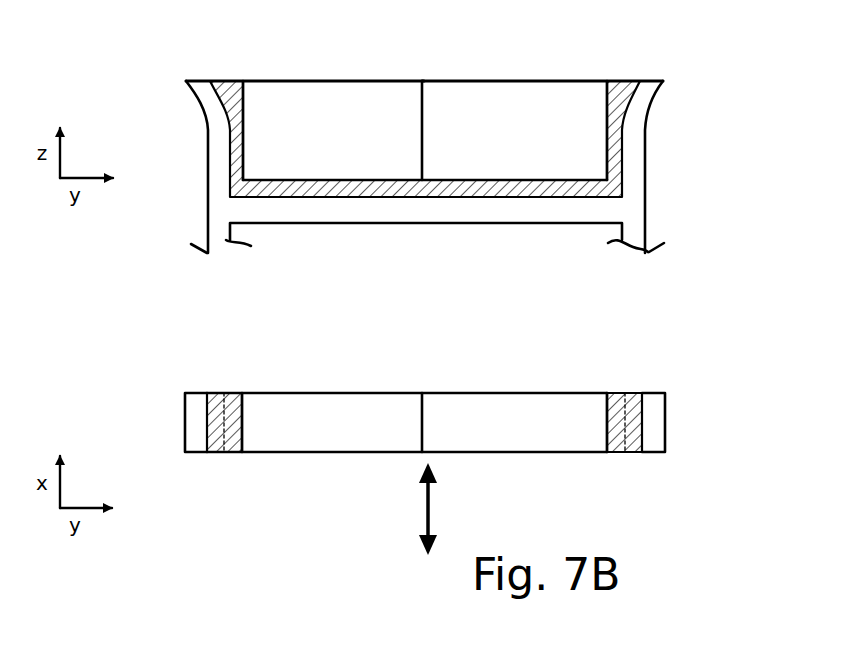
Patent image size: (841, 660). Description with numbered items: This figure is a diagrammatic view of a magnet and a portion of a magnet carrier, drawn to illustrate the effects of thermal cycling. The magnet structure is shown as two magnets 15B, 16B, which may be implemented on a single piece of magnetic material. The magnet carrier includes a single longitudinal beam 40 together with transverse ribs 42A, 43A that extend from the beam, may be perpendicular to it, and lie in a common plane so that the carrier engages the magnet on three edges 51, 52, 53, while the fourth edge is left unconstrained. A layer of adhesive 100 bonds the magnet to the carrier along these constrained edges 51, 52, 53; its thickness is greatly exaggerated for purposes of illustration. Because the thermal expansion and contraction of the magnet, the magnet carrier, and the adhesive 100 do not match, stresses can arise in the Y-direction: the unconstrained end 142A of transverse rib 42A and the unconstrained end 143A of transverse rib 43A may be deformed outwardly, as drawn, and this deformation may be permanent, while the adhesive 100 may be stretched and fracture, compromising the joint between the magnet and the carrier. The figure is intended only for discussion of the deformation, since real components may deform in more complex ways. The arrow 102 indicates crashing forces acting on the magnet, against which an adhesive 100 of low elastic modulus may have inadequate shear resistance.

The adhesive 100 is at (221, 81).
The unconstrained end of transverse rib 42A 142A is at (186, 81).
The unconstrained end of transverse rib 43A 143A is at (663, 81).
The transverse rib 42A is at (208, 161).
The transverse rib 43A is at (645, 176).
The constrained edge of magnet 51 is at (243, 122).
The constrained edge of magnet 52 is at (347, 180).
The constrained edge of magnet 53 is at (607, 117).
The magnet 15B is at (293, 285).
The magnet 16B is at (471, 266).
The longitudinal beam 40 is at (426, 223).
The arrow indicating crashing forces 102 is at (428, 500).